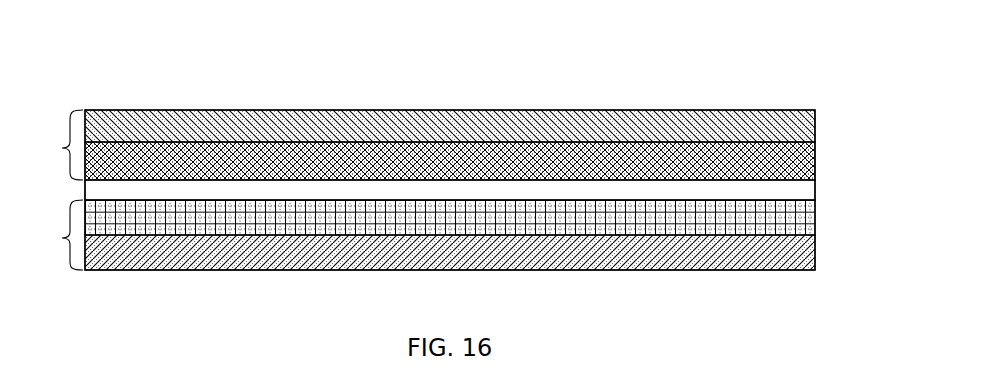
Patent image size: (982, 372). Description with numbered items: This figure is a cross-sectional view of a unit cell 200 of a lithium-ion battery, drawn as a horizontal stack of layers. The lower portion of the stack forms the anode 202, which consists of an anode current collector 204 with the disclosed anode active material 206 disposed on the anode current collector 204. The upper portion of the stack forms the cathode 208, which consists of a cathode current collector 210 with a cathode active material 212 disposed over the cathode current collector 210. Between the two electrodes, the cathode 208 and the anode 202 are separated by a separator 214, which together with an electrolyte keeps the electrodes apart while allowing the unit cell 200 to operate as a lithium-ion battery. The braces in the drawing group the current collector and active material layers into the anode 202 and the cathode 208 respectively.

The unit cell 200 is at (838, 104).
The anode 202 is at (52, 235).
The anode current collector 204 is at (817, 250).
The anode active material 206 is at (817, 222).
The cathode 208 is at (52, 145).
The cathode current collector 210 is at (817, 131).
The cathode active material 212 is at (817, 160).
The separator 214 is at (800, 195).